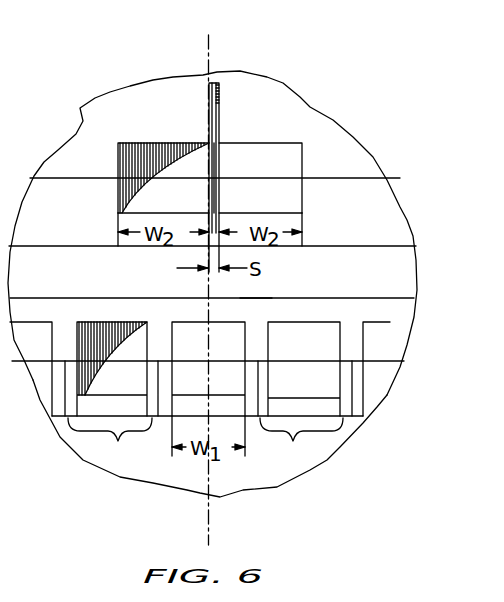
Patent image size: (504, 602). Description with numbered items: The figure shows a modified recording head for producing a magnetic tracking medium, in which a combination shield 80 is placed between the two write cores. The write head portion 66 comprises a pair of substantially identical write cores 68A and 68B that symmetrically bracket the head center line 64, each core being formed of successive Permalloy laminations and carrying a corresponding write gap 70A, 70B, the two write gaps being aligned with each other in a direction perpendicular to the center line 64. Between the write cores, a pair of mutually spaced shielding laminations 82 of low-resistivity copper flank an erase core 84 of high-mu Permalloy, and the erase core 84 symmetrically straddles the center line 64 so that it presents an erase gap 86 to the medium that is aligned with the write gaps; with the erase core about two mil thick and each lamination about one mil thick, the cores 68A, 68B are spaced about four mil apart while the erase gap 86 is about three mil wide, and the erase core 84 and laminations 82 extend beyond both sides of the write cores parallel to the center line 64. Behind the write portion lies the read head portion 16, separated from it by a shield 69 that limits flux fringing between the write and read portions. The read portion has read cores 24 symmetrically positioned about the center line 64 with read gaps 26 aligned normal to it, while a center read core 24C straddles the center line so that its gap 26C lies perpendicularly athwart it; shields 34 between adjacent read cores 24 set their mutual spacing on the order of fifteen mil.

The read head portion 16 is at (328, 442).
The read cores 24 is at (47, 334).
The center read core 24C is at (247, 302).
The read gaps 26 is at (131, 357).
The center read gap 26C is at (185, 360).
The shields 34 is at (207, 441).
The head center line 64 is at (208, 282).
The write head portion 66 is at (406, 217).
The write core 68A is at (128, 194).
The write core 68B is at (295, 200).
The shield 69 is at (397, 287).
The write gap 70A is at (138, 174).
The write gap 70B is at (283, 180).
The combination shield 80 is at (222, 82).
The shielding laminations 82 is at (208, 92).
The erase core 84 is at (212, 115).
The erase gap 86 is at (214, 177).